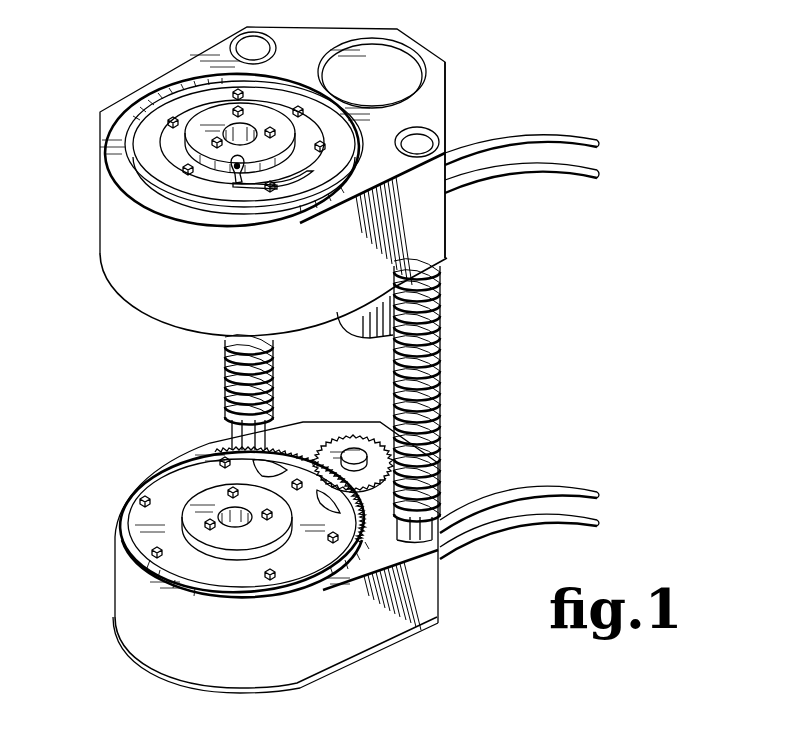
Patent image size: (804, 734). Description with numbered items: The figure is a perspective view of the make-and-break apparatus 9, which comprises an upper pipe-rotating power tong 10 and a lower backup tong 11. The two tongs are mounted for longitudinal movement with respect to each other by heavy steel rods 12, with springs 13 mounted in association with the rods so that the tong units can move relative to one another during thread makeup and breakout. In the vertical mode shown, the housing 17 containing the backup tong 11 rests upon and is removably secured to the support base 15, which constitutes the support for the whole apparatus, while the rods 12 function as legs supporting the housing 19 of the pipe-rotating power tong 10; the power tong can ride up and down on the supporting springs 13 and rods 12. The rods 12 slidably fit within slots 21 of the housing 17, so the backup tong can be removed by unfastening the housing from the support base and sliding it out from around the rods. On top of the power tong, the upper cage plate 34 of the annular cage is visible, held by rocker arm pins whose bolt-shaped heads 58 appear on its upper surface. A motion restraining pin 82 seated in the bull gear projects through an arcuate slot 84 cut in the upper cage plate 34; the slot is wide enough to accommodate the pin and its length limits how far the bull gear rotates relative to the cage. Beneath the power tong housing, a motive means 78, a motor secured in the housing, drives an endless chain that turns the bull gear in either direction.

The make-and-break apparatus 9 is at (222, 358).
The pipe-rotating power tong 10 is at (118, 248).
The backup tong 11 is at (140, 608).
The steel rods 12 is at (237, 435).
The springs 13 is at (442, 350).
The support base 15 is at (183, 677).
The housing 17 is at (438, 572).
The housing 19 is at (428, 233).
The slots 21 is at (285, 437).
The upper cage plate 34 is at (308, 133).
The bolt-shaped head 58 is at (170, 115).
The motive means 78 is at (372, 320).
The motion restraining pin 82 is at (233, 172).
The arcuate slot 84 is at (293, 170).